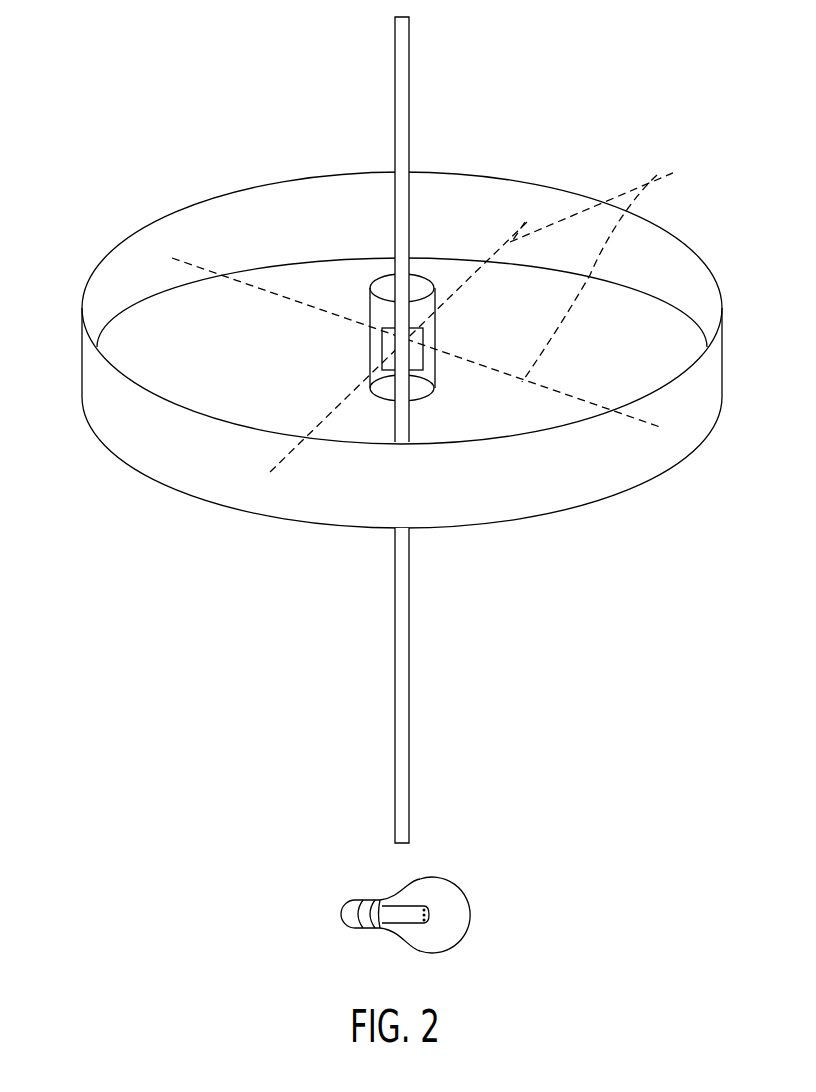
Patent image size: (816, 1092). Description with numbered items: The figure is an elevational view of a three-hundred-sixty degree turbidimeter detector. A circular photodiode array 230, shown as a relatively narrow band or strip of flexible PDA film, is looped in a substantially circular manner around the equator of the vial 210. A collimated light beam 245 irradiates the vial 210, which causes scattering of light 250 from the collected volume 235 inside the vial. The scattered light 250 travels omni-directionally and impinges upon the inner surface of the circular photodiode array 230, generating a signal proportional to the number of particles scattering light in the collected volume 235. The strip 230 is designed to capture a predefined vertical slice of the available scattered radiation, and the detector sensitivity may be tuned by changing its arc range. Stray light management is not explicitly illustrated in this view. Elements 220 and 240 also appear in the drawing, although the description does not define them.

The vial 210 is at (368, 300).
The light bulb 220 is at (373, 900).
The circular photodiode array 230 is at (513, 502).
The collected volume 235 is at (380, 350).
The hub 240 is at (415, 287).
The collimated light beam 245 is at (410, 730).
The scattered light 250 is at (440, 316).